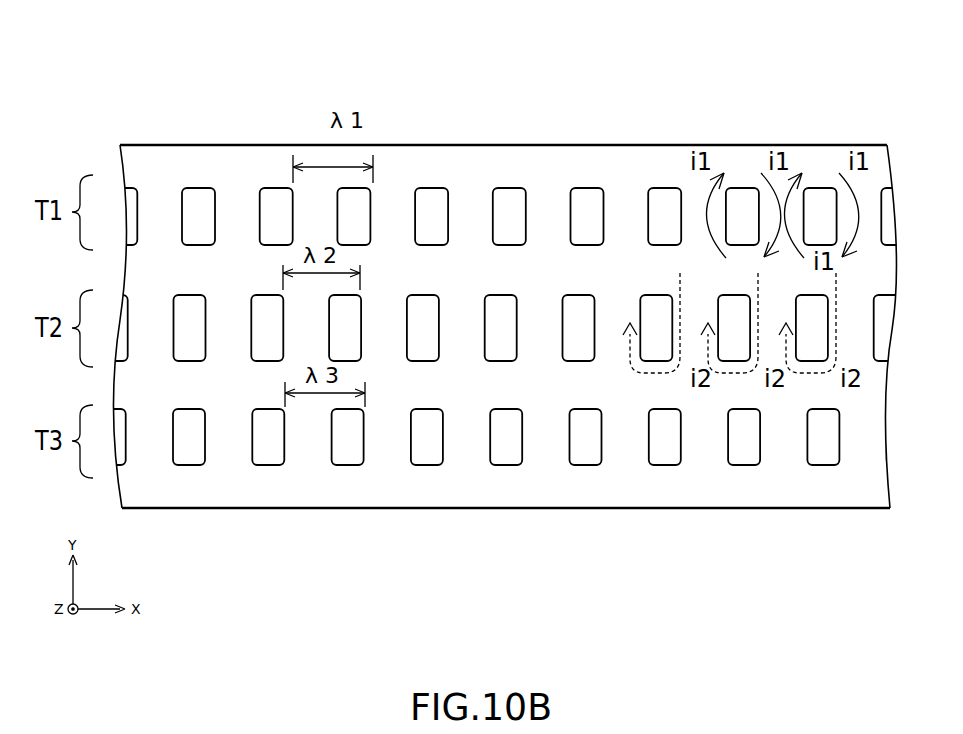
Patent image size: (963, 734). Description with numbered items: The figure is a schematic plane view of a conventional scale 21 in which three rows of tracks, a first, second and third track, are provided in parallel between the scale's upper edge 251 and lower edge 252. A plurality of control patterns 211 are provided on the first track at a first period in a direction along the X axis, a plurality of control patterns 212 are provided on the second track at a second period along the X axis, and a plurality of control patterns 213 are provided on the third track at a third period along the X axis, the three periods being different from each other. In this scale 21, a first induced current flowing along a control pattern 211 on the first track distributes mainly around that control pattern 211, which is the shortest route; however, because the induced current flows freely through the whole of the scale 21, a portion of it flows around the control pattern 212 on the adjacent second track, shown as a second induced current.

The scale 21 is at (862, 105).
The control pattern 211 is at (200, 202).
The control pattern 212 is at (185, 345).
The control pattern 213 is at (185, 457).
The upper edge 251 is at (525, 145).
The lower edge 252 is at (499, 510).